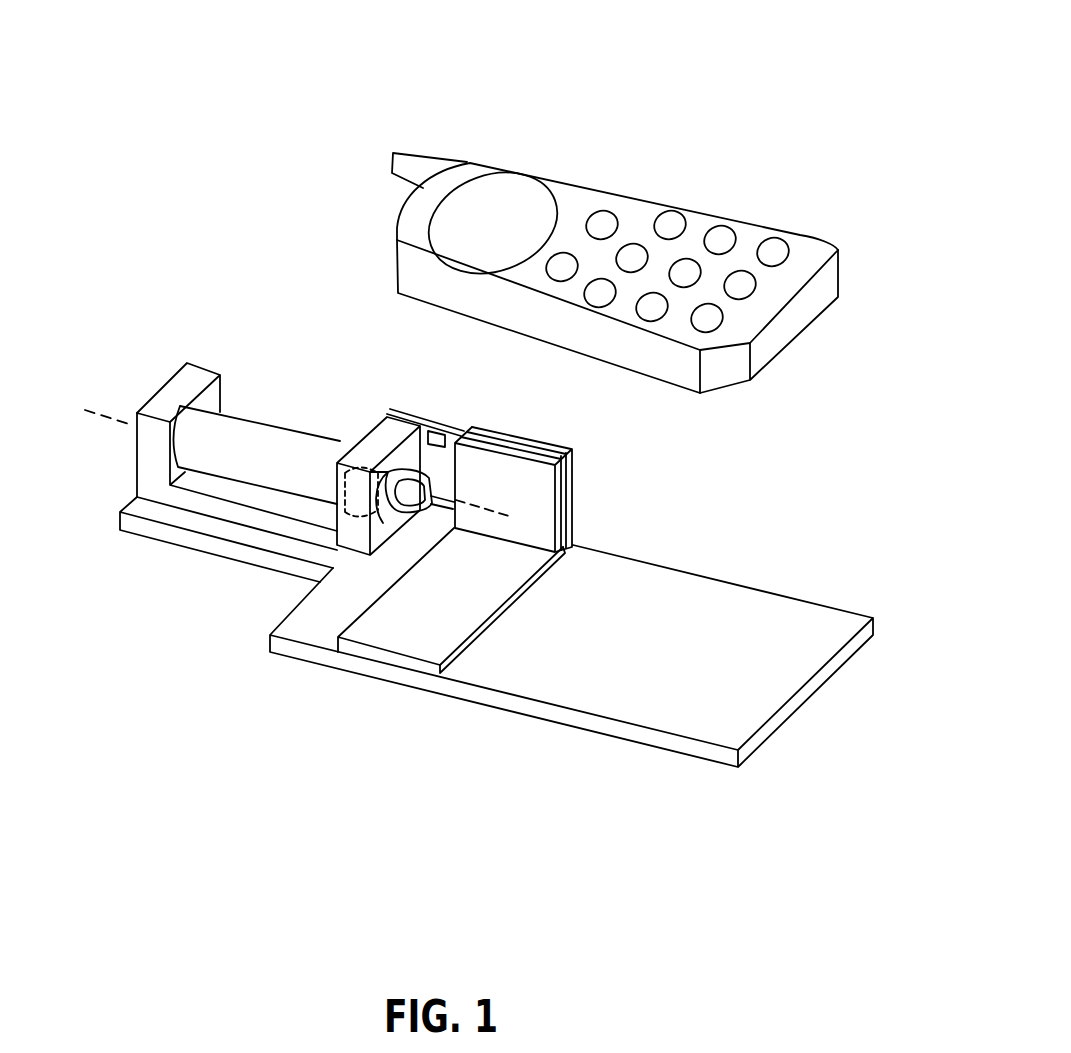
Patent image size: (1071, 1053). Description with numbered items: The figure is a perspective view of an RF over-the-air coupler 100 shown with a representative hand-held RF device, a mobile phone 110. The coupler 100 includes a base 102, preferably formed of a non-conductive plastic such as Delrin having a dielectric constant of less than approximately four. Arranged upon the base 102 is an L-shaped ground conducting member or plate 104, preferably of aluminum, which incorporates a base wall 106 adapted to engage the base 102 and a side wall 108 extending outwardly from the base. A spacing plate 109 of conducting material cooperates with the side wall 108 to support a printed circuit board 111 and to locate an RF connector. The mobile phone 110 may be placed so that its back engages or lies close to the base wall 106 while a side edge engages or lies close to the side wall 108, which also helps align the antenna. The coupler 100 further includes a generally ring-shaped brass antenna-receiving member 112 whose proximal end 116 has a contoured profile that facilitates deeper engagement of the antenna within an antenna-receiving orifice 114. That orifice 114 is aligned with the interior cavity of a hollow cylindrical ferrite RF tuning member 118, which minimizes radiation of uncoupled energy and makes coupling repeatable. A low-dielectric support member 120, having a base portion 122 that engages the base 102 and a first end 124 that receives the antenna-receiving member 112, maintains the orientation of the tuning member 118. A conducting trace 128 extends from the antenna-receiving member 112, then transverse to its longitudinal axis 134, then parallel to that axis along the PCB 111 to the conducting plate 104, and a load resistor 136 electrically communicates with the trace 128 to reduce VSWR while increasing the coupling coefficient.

The RF over-the-air coupler 100 is at (240, 100).
The base 102 is at (772, 635).
The ground conducting member or plate 104 is at (470, 618).
The base wall 106 is at (505, 585).
The side wall 108 is at (538, 502).
The spacing plate 109 is at (483, 430).
The mobile phone 110 is at (603, 197).
The printed circuit board 111 is at (513, 443).
The antenna-receiving member 112 is at (390, 512).
The antenna-receiving orifice 114 is at (427, 512).
The proximal end 116 is at (452, 493).
The RF tuning member 118 is at (252, 417).
The support member 120 is at (193, 372).
The base portion 122 is at (152, 451).
The first end 124 is at (345, 453).
The conducting trace 128 is at (375, 462).
The longitudinal axis 134 is at (110, 417).
The load resistor 136 is at (435, 430).